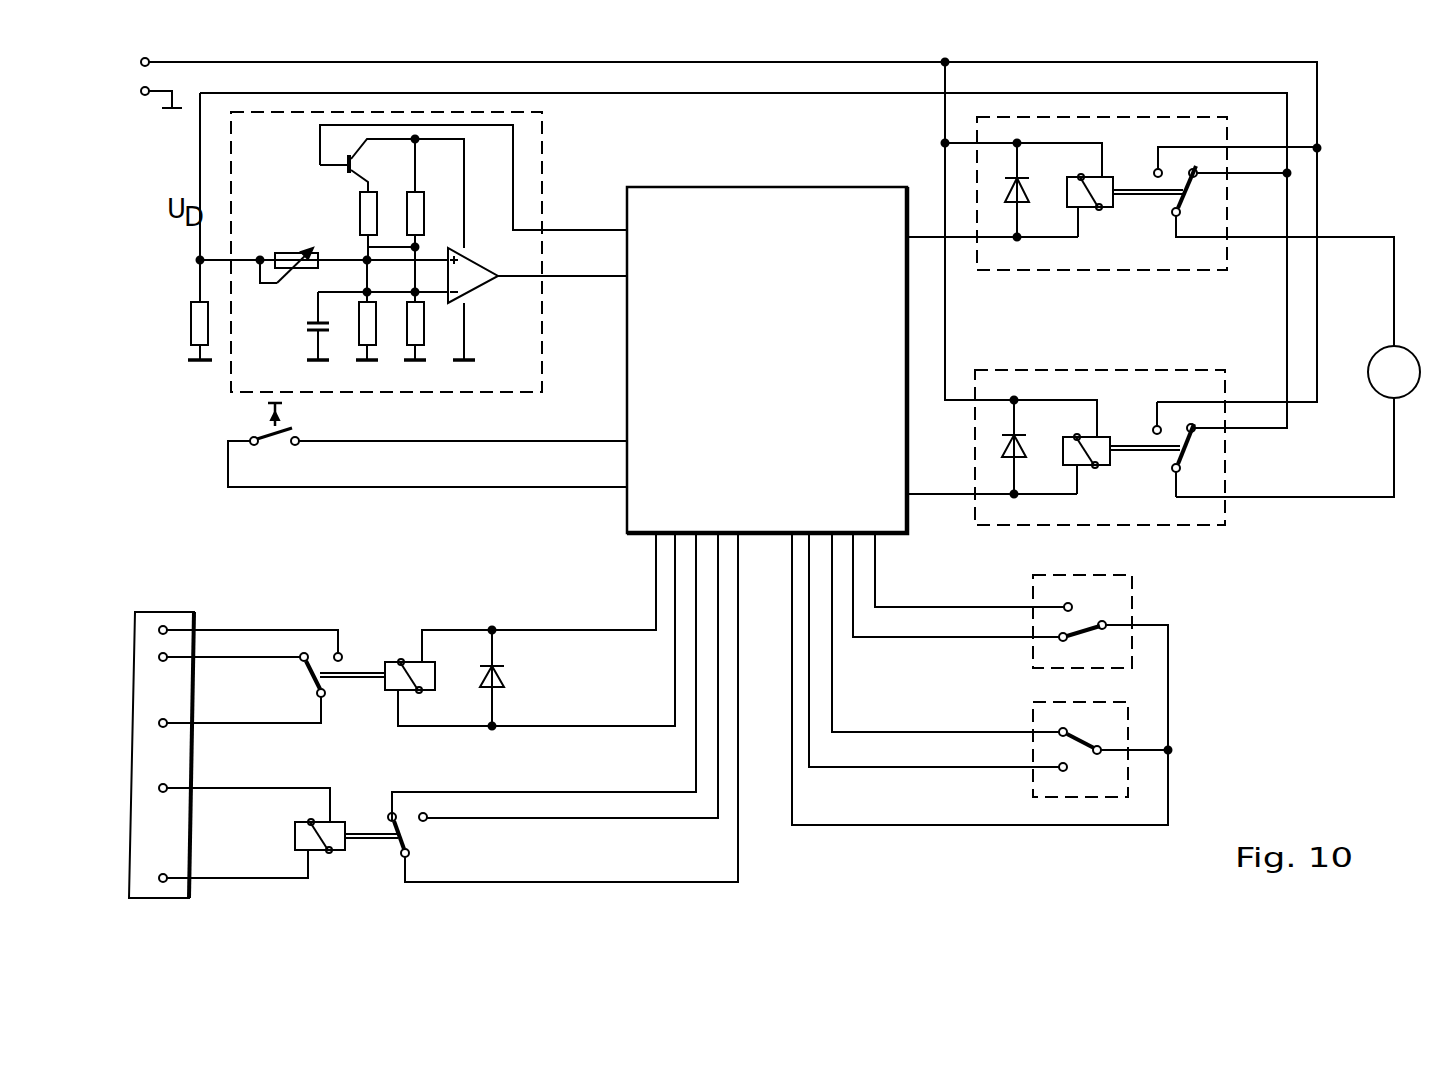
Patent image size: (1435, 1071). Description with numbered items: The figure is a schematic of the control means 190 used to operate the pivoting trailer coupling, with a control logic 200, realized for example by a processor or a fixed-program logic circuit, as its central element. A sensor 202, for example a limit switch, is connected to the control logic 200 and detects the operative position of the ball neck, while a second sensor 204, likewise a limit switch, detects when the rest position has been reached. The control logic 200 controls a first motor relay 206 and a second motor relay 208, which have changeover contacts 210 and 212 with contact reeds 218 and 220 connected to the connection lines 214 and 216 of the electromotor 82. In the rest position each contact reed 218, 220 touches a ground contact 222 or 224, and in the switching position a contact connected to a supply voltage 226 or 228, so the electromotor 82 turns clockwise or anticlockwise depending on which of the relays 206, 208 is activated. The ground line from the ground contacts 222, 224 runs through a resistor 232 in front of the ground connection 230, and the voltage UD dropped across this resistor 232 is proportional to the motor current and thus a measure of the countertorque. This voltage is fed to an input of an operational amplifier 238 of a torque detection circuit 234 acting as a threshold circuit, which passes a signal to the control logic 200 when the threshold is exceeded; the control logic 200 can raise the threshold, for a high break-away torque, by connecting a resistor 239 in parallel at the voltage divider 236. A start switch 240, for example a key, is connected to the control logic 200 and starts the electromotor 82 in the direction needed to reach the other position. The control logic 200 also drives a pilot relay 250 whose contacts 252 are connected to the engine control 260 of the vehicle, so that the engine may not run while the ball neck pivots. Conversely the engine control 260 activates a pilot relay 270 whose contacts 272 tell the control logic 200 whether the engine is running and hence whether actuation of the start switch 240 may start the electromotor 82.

The electromotor 82 is at (1371, 362).
The control means 190 is at (1250, 632).
The control logic 200 is at (765, 205).
The sensor 202 is at (1033, 783).
The second sensor 204 is at (1033, 590).
The first motor relay 206 is at (1138, 518).
The second motor relay 208 is at (1135, 265).
The changeover contact 210 is at (1185, 457).
The changeover contact 212 is at (1185, 201).
The connection line 214 is at (1377, 500).
The connection line 216 is at (1378, 239).
The contact reed 218 is at (1188, 444).
The contact reed 220 is at (1188, 188).
The ground contact 222 is at (1196, 424).
The ground contact 224 is at (1198, 168).
The supply voltage 226 is at (1154, 427).
The supply voltage 228 is at (1155, 168).
The ground connection 230 is at (193, 366).
The resistor 232 is at (191, 323).
The torque detection circuit 234 is at (546, 136).
The voltage divider 236 is at (432, 205).
The operational amplifier 238 is at (477, 298).
The resistor 239 is at (360, 212).
The start switch 240 is at (265, 428).
The pilot relay 250 is at (383, 650).
The contacts 252 is at (304, 668).
The engine control 260 is at (147, 617).
The pilot relay 270 is at (350, 810).
The contacts 272 is at (408, 838).